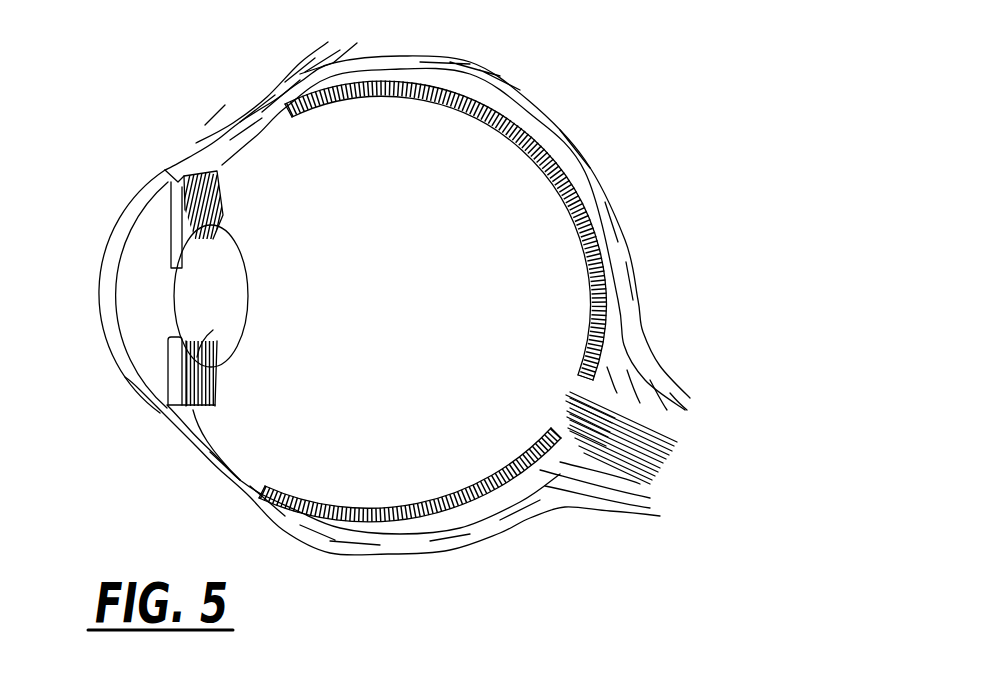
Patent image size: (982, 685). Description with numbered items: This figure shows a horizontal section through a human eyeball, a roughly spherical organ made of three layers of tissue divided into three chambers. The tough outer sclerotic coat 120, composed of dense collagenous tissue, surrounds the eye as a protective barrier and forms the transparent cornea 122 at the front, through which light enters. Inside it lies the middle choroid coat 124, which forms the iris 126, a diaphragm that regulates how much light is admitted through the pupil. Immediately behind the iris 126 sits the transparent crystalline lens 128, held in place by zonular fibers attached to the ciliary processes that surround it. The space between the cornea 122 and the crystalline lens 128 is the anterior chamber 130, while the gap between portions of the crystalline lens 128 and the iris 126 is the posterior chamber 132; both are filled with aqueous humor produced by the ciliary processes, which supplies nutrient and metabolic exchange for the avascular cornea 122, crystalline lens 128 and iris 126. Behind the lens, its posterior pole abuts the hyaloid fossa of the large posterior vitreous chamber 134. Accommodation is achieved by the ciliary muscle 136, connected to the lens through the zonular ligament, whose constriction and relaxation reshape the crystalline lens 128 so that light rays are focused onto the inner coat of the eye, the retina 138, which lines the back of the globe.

The sclerotic coat 120 is at (528, 100).
The cornea 122 is at (121, 373).
The choroid coat 124 is at (575, 177).
The iris 126 is at (171, 222).
The crystalline lens 128 is at (175, 427).
The anterior chamber 130 is at (138, 272).
The posterior chamber 132 is at (178, 182).
The posterior vitreous chamber 134 is at (425, 366).
The ciliary muscle 136 is at (203, 167).
The retina 138 is at (590, 235).